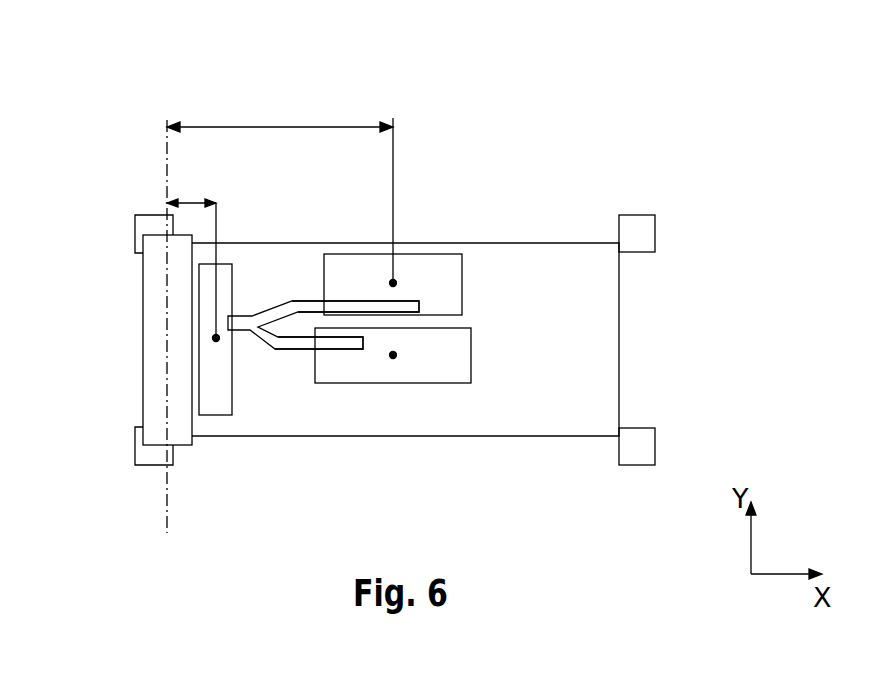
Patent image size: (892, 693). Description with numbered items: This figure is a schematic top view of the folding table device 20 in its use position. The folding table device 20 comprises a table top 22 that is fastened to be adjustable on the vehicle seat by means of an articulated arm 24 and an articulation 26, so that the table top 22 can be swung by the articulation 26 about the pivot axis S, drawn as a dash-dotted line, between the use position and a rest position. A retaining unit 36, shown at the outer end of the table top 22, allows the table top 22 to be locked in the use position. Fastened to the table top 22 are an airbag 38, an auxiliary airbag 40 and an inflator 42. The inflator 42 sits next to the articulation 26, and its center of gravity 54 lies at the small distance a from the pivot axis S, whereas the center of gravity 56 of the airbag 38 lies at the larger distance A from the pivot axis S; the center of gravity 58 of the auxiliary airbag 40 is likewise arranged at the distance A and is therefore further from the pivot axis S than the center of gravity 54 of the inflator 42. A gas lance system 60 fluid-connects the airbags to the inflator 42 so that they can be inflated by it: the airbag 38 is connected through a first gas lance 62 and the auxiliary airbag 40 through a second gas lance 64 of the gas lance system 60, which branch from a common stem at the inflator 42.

The folding table device 20 is at (136, 160).
The table top 22 is at (567, 255).
The articulated arm 24 is at (150, 453).
The articulation 26 is at (152, 373).
The retaining unit 36 is at (643, 443).
The airbag 38 is at (411, 265).
The auxiliary airbag 40 is at (448, 367).
The inflator 42 is at (218, 400).
The center of gravity of the inflator 54 is at (214, 338).
The center of gravity of the airbag 56 is at (391, 283).
The center of gravity of the auxiliary airbag 58 is at (393, 358).
The gas lance system 60 is at (253, 344).
The first gas lance 62 is at (370, 308).
The second gas lance 64 is at (323, 338).
The pivot axis S is at (166, 520).
The distance A is at (266, 124).
The distance a is at (190, 200).